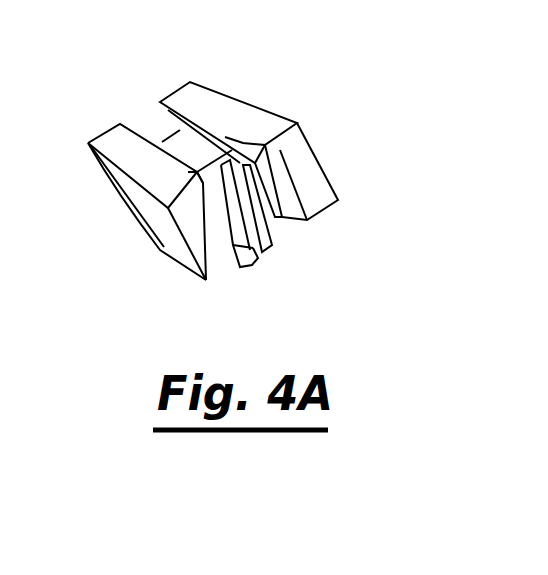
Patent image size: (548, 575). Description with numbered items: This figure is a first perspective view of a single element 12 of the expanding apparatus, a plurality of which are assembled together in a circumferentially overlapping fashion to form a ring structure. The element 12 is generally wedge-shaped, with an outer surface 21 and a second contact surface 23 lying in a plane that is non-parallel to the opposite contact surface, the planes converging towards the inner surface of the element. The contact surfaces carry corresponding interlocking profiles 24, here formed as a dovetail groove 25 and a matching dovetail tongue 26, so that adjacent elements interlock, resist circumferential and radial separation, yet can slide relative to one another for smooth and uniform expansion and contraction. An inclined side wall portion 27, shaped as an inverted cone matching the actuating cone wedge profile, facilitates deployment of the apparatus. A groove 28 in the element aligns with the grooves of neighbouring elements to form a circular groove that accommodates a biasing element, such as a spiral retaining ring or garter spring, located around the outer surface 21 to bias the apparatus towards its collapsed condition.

The element 12 is at (336, 105).
The outer surface 21 is at (310, 176).
The second contact surface 23 is at (218, 110).
The interlocking profile 24 is at (128, 100).
The dovetail groove 25 is at (277, 218).
The dovetail tongue 26 is at (248, 256).
The inclined side wall portion 27 is at (122, 198).
The groove 28 is at (263, 252).